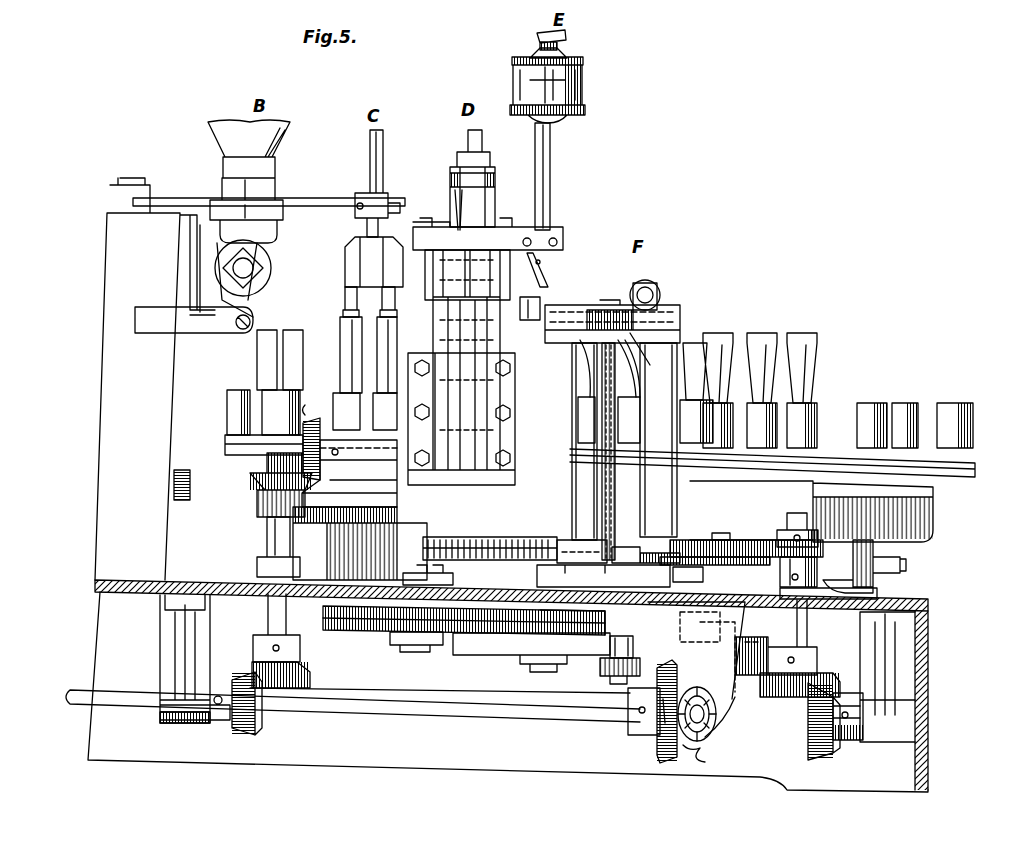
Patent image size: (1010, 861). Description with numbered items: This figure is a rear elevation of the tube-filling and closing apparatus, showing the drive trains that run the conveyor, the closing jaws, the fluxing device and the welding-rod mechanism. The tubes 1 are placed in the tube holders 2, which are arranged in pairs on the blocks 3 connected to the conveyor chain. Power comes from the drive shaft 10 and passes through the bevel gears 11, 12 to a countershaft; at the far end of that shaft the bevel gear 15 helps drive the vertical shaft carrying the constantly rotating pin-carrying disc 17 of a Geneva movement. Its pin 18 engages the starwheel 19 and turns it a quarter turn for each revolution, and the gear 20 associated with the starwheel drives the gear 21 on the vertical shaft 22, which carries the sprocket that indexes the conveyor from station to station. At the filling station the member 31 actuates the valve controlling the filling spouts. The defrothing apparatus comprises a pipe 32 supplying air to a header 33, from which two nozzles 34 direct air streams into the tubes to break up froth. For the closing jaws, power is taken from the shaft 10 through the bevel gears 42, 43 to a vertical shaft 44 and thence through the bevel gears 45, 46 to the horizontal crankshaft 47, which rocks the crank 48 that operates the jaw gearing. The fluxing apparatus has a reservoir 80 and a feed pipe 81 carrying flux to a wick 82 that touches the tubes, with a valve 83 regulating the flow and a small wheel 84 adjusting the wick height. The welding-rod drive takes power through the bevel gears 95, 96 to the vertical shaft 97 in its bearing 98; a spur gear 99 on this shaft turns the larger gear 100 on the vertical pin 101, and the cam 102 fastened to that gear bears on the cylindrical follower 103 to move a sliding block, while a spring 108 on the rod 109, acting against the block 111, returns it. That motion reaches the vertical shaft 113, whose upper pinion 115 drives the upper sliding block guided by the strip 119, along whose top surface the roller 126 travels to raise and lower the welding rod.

The tubes 1 is at (757, 371).
The tube holders 2 is at (858, 425).
The blocks 3 is at (975, 470).
The drive shaft 10 is at (488, 720).
The bevel gear 11 is at (650, 745).
The bevel gear 12 is at (710, 750).
The bevel gear 15 is at (740, 700).
The pin-carrying disc 17 is at (600, 669).
The pin 18 is at (625, 637).
The starwheel 19 is at (496, 656).
The gear 20 is at (575, 630).
The gear 21 is at (372, 630).
The vertical shaft 22 is at (420, 648).
The member 31 is at (140, 320).
The pipe 32 is at (370, 155).
The header 33 is at (355, 248).
The nozzles 34 is at (357, 295).
The bevel gear 42 is at (250, 728).
The bevel gear 43 is at (308, 672).
The vertical shaft 44 is at (268, 617).
The bevel gear 45 is at (252, 482).
The bevel gear 46 is at (318, 420).
The horizontal crankshaft 47 is at (347, 445).
The crank 48 is at (480, 383).
The reservoir 80 is at (585, 110).
The feed pipe 81 is at (551, 178).
The wick 82 is at (542, 310).
The valve 83 is at (567, 36).
The small wheel 84 is at (550, 270).
The bevel gear 95 is at (828, 742).
The bevel gear 96 is at (818, 658).
The vertical shaft 97 is at (797, 513).
The bearing 98 is at (873, 585).
The spur gear 99 is at (818, 552).
The gear 100 is at (700, 540).
The vertical pin 101 is at (728, 533).
The cam 102 is at (715, 570).
The cylindrical follower 103 is at (640, 548).
The spring 108 is at (490, 540).
The rod 109 is at (342, 543).
The block 111 is at (562, 540).
The vertical shaft 113 is at (609, 501).
The pinion 115 is at (653, 357).
The strip 119 is at (680, 312).
The roller 126 is at (652, 283).